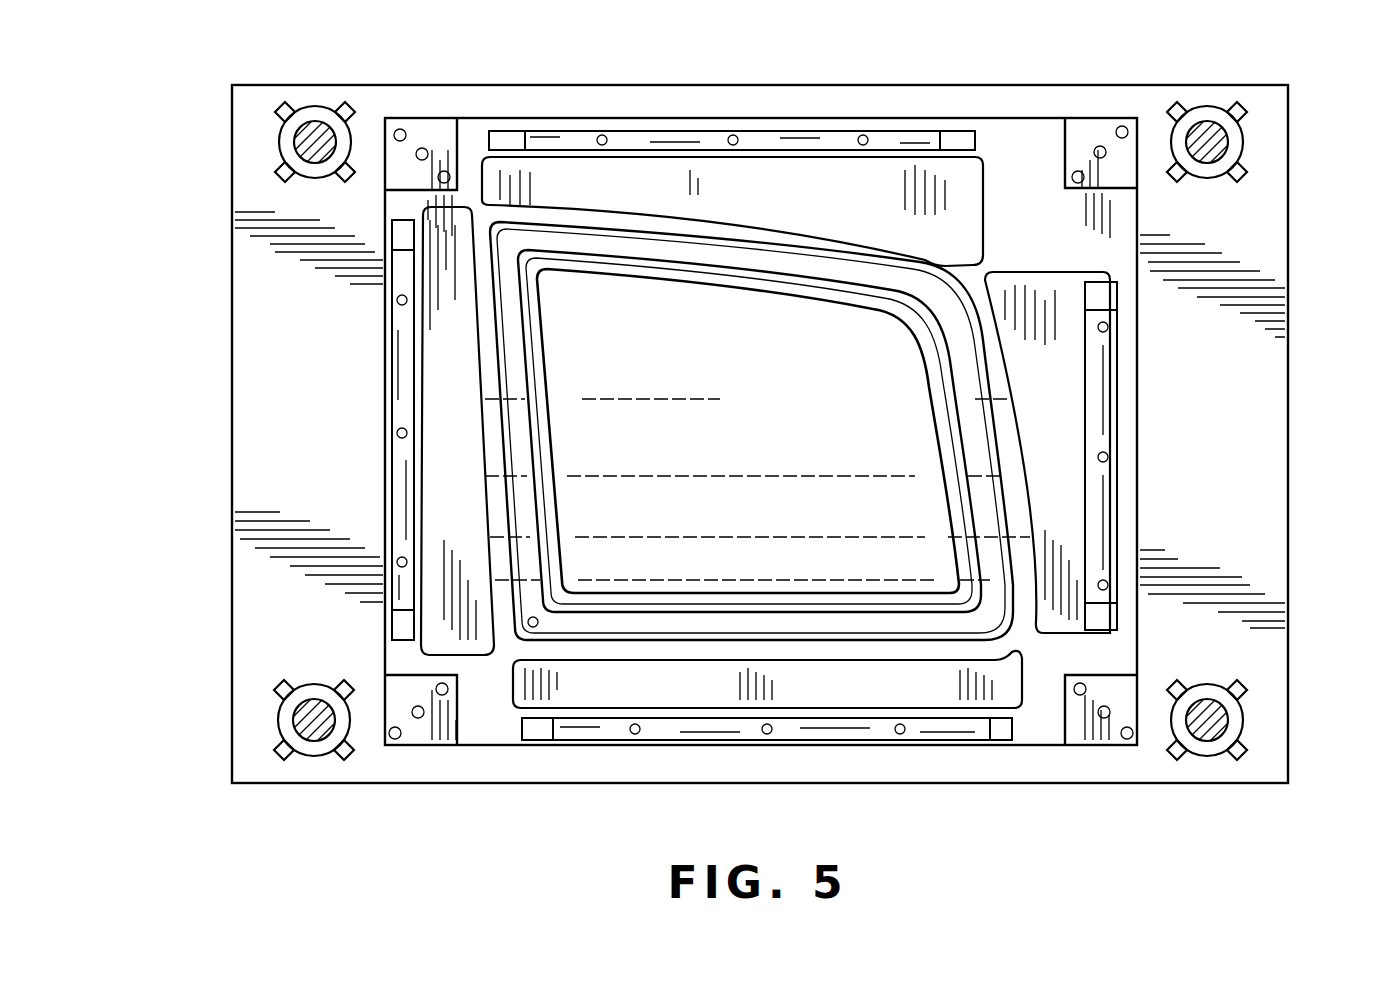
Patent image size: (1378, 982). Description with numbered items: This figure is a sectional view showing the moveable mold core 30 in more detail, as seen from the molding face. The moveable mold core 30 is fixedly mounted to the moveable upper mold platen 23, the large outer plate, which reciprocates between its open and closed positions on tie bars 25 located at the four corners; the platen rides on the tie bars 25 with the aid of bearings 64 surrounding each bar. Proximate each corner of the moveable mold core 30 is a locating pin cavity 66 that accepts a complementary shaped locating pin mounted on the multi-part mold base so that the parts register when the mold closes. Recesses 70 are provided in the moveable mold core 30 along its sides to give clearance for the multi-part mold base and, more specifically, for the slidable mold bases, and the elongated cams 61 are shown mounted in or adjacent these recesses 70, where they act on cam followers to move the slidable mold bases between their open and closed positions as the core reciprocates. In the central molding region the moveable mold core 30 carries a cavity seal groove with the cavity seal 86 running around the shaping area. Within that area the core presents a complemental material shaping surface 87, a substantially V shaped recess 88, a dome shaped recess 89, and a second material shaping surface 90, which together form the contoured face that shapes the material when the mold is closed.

The moveable upper mold platen 23 is at (230, 375).
The tie bars 25 is at (300, 152).
The moveable mold core 30 is at (1140, 474).
The cams 61 is at (640, 132).
The bearings 64 is at (317, 107).
The locating pin cavity 66 is at (423, 148).
The recesses 70 is at (962, 200).
The cavity seal 86 is at (812, 284).
The complemental material shaping surface 87 is at (915, 645).
The substantially V shaped recess 88 is at (797, 254).
The dome shaped recess 89 is at (643, 266).
The second material shaping surface 90 is at (710, 258).